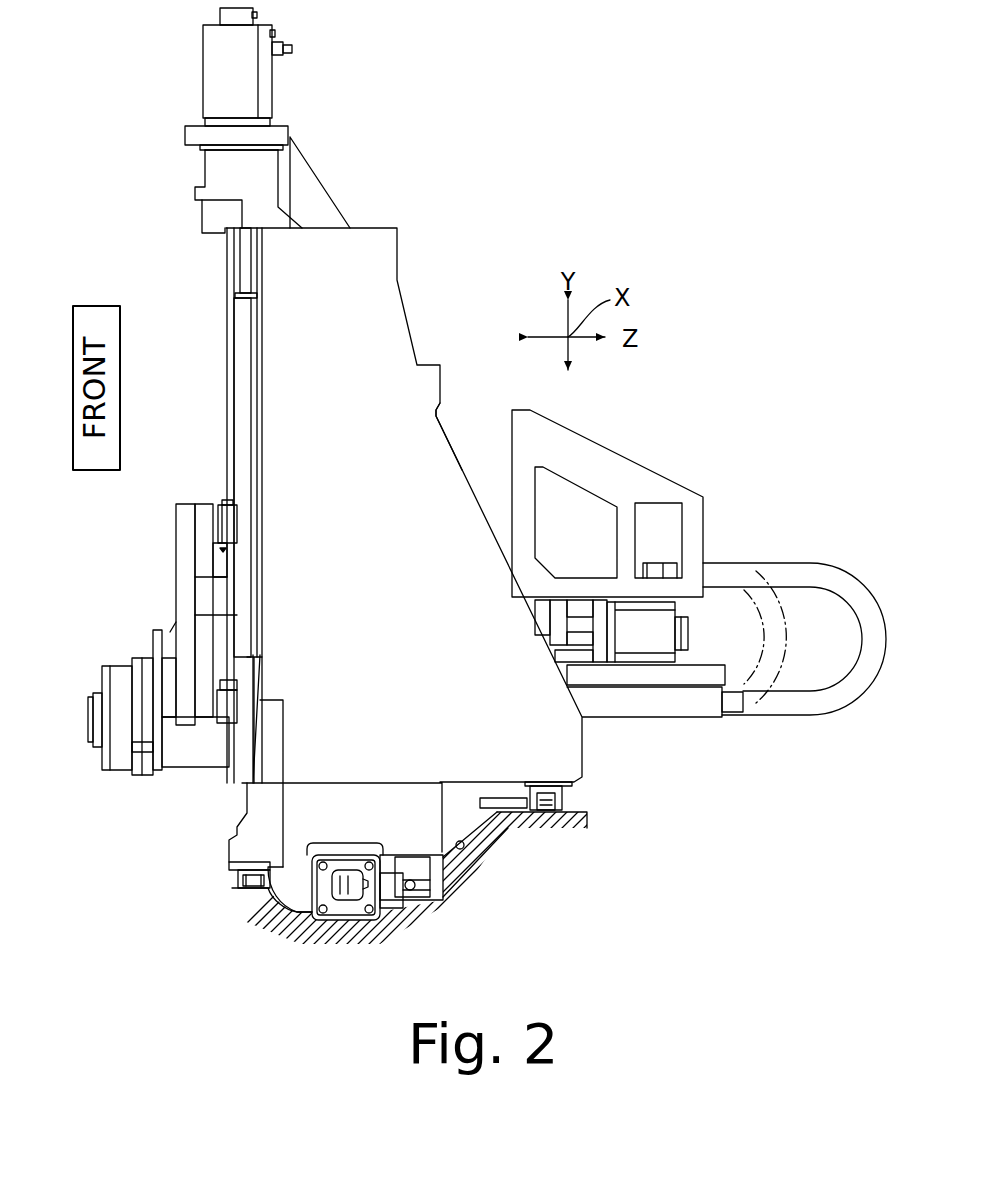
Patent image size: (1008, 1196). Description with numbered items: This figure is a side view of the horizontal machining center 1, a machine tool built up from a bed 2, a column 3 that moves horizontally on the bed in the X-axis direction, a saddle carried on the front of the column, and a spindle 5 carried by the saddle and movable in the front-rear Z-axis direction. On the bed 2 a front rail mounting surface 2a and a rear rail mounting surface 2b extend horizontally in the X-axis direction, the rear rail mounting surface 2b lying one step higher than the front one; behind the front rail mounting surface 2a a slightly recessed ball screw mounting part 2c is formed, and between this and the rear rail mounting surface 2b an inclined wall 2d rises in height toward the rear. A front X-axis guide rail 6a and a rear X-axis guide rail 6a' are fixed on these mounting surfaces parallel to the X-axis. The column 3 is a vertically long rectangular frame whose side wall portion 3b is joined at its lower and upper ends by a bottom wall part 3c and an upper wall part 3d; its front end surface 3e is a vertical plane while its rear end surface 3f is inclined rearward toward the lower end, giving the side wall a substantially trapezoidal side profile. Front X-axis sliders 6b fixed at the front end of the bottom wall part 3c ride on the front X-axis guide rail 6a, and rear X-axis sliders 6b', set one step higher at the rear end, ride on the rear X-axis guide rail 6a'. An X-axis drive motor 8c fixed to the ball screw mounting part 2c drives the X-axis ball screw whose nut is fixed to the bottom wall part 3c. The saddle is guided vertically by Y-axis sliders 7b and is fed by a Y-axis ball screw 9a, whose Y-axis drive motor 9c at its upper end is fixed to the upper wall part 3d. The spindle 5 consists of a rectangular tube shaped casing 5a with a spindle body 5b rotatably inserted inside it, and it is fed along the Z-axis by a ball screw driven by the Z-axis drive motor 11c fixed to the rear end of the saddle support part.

The horizontal machining center 1 is at (460, 167).
The bed 2 is at (492, 853).
The front rail mounting surface 2a is at (232, 888).
The rear rail mounting surface 2b is at (588, 812).
The ball screw mounting part 2c is at (292, 930).
The inclined wall 2d is at (475, 848).
The column 3 is at (422, 330).
The right side wall portion 3b is at (430, 448).
The bottom wall part 3c is at (457, 878).
The upper wall part 3d is at (330, 227).
The front end surface 3e is at (238, 270).
The rear end surface 3f is at (465, 470).
The spindle 5 is at (128, 637).
The casing 5a is at (176, 600).
The spindle body 5b is at (88, 705).
The front X-axis guide rail 6a is at (212, 885).
The rear X-axis guide rail 6a' is at (600, 790).
The front X-axis slider 6b is at (212, 855).
The rear X-axis slider 6b' is at (572, 773).
The Y-axis slider 7b is at (213, 520).
The X-axis drive motor 8c is at (362, 918).
The Y-axis ball screw 9a is at (226, 376).
The Y-axis drive motor 9c is at (275, 96).
The Z-axis drive motor 11c is at (665, 632).